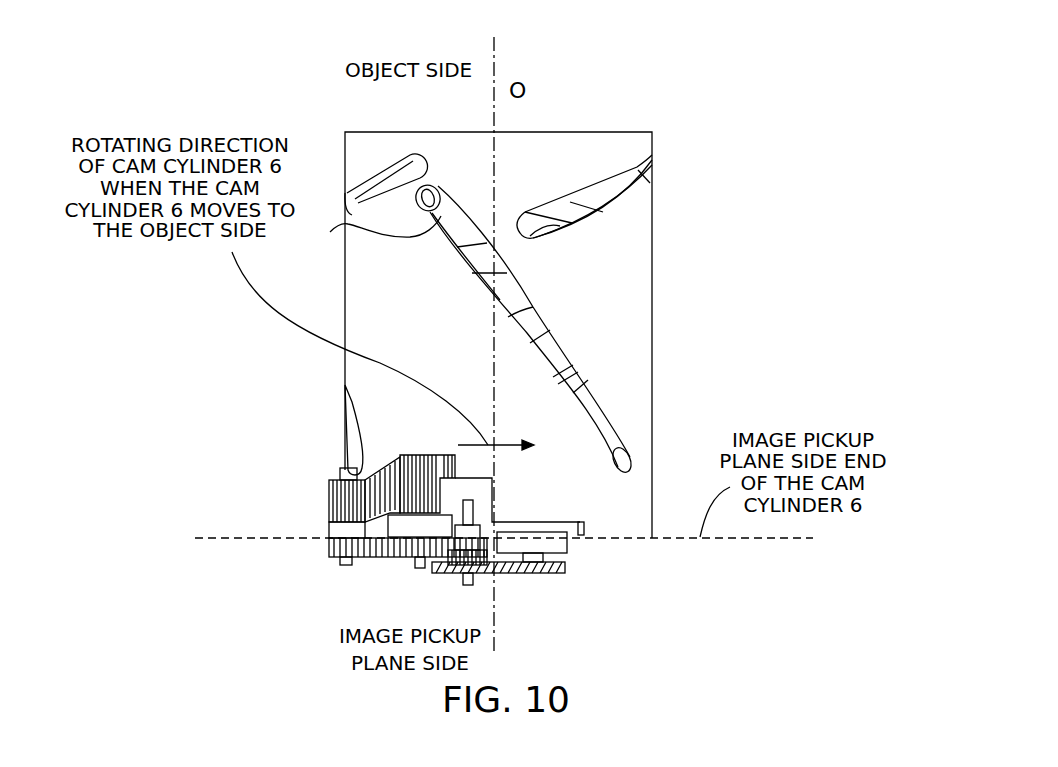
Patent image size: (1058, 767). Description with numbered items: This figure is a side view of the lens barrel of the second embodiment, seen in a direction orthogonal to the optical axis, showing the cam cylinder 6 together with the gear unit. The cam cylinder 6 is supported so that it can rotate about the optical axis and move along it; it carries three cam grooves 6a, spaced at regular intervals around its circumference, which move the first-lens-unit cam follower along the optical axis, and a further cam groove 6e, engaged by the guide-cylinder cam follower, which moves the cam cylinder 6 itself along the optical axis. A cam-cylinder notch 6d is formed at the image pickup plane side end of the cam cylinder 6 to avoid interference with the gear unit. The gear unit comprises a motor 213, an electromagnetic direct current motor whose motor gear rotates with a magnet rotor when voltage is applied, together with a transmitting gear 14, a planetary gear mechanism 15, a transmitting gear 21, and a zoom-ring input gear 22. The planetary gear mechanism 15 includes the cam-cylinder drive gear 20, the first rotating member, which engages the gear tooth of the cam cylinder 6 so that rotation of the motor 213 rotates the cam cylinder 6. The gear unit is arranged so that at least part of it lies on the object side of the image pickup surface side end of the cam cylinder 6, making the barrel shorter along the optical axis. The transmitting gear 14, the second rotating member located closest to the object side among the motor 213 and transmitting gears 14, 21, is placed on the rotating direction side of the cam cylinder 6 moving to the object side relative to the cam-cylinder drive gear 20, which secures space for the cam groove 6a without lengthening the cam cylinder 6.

The cam cylinder 6 is at (642, 272).
The cam groove 6a is at (345, 224).
The cam-cylinder notch 6d is at (583, 522).
The cam groove 6e is at (650, 183).
The transmitting gear 14 is at (472, 575).
The planetary gear mechanism 15 is at (387, 558).
The cam-cylinder drive gear 20 is at (413, 485).
The transmitting gear 21 is at (353, 562).
The zoom-ring input gear 22 is at (333, 512).
The motor 213 is at (567, 547).